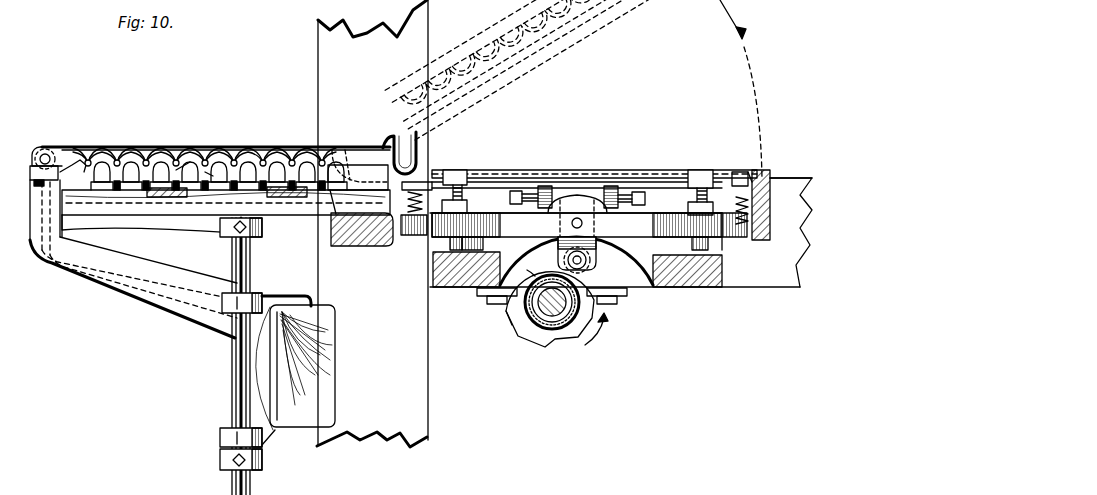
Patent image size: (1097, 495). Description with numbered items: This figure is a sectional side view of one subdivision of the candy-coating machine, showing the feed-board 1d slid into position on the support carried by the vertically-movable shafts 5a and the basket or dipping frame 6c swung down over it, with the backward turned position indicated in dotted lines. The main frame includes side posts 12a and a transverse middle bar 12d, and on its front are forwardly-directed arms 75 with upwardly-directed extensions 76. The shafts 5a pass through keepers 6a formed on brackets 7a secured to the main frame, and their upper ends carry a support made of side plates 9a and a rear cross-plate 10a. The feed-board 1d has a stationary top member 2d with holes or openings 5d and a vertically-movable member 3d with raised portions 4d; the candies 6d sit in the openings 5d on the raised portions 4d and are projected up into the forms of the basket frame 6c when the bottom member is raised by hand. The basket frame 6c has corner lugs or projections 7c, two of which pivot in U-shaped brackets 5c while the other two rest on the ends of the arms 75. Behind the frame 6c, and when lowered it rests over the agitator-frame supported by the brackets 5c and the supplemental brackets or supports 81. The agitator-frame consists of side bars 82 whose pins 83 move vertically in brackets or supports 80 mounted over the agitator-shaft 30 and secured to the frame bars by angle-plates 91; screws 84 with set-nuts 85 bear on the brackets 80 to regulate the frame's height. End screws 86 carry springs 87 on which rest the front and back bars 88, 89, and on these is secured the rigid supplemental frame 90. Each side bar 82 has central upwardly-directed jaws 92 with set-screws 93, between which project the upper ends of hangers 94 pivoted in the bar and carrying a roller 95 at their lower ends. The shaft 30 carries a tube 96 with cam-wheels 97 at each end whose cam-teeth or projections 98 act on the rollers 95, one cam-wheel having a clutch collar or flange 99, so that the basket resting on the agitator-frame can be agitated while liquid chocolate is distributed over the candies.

The feed-board 1d is at (160, 195).
The stationary top member 2d is at (115, 147).
The vertically-movable member 3d is at (270, 196).
The raised portions 4d is at (130, 200).
The vertically-movable shafts 5a is at (232, 368).
The U-shaped brackets 5c is at (390, 142).
The holes or openings 5d is at (139, 145).
The keepers 6a is at (232, 303).
The basket or dipping frames 6c is at (178, 150).
The candies 6d is at (210, 168).
The brackets 7a is at (265, 395).
The lugs or projections 7c is at (50, 153).
The side plates 9a is at (80, 232).
The rear cross-plate 10a is at (358, 246).
The side posts 12a is at (372, 223).
The transverse middle bar 12d is at (783, 297).
The agitator-shaft 30 is at (552, 318).
The forwardly-directed arms 75 is at (142, 305).
The upwardly-directed extensions 76 is at (33, 262).
The brackets or supports 80 is at (455, 287).
The supplemental brackets or supports 81 is at (775, 178).
The side bars 82 is at (577, 225).
The pins 83 is at (484, 243).
The screws 84 is at (466, 170).
The set-nuts 85 is at (468, 206).
The screws 86 is at (412, 218).
The springs 87 is at (410, 237).
The front bar 88 is at (418, 185).
The back bar 89 is at (753, 176).
The rigid supplemental frame 90 is at (580, 170).
The angle-plates 91 is at (724, 247).
The jaws 92 is at (545, 185).
The set-screws 93 is at (510, 196).
The hangers 94 is at (596, 240).
The roller 95 is at (592, 262).
The tube 96 is at (545, 318).
The cam-wheels 97 is at (562, 340).
The cam-teeth or projections 98 is at (508, 322).
The clutch collar or flange 99 is at (552, 276).